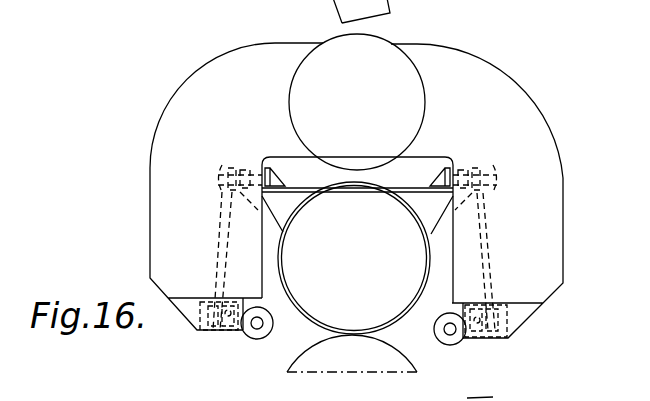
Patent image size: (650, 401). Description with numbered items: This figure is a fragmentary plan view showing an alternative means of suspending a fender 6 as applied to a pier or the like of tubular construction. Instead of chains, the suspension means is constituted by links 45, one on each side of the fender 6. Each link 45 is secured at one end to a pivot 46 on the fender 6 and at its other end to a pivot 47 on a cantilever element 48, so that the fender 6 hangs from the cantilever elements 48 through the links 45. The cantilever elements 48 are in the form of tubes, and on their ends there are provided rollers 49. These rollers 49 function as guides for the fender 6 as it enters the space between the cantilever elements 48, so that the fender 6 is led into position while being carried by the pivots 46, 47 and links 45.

The cantilever element 48 is at (187, 98).
The pivot 46 is at (273, 173).
The fender 6 is at (353, 231).
The link 45 is at (218, 240).
The pivot 47 is at (205, 312).
The roller 49 is at (245, 337).